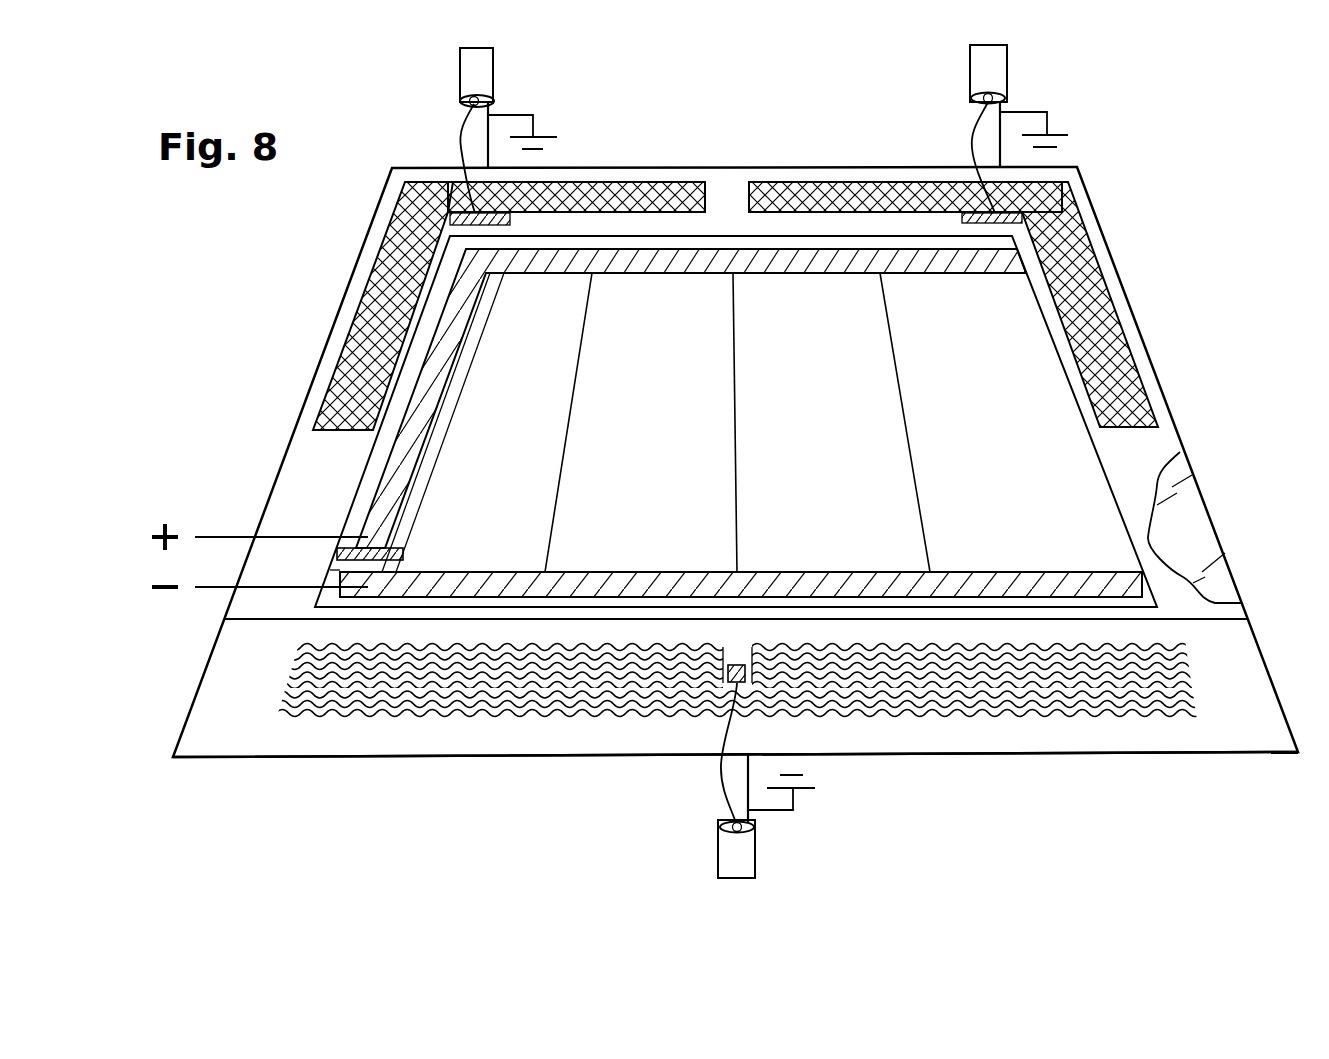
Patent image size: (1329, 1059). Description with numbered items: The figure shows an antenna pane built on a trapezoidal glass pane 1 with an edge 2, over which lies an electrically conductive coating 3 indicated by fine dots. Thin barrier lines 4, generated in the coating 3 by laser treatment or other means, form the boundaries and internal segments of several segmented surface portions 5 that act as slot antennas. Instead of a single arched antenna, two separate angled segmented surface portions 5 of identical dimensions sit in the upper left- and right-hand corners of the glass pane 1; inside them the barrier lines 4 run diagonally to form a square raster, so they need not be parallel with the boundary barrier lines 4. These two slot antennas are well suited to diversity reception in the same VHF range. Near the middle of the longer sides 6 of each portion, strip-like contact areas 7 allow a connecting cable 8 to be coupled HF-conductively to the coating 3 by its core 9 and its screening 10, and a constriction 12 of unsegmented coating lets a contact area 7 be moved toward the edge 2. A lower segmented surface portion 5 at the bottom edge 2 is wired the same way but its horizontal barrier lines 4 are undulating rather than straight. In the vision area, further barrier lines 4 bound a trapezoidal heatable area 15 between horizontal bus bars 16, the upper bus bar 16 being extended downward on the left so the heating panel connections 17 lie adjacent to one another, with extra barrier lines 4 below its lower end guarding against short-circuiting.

The glass pane 1 is at (256, 782).
The edge 2 is at (1203, 755).
The electrically conductive coating 3 is at (1112, 725).
The barrier lines 4 is at (433, 223).
The segmented surface portion 5 is at (351, 320).
The longer sides 6 is at (628, 185).
The contact areas 7 is at (472, 156).
The connecting cable 8 is at (490, 68).
The core 9 is at (483, 117).
The screening 10 is at (487, 138).
The constriction 12 is at (733, 655).
The heatable area 15 is at (845, 515).
The bus bars 16 is at (738, 260).
The heating panel connections 17 is at (186, 615).